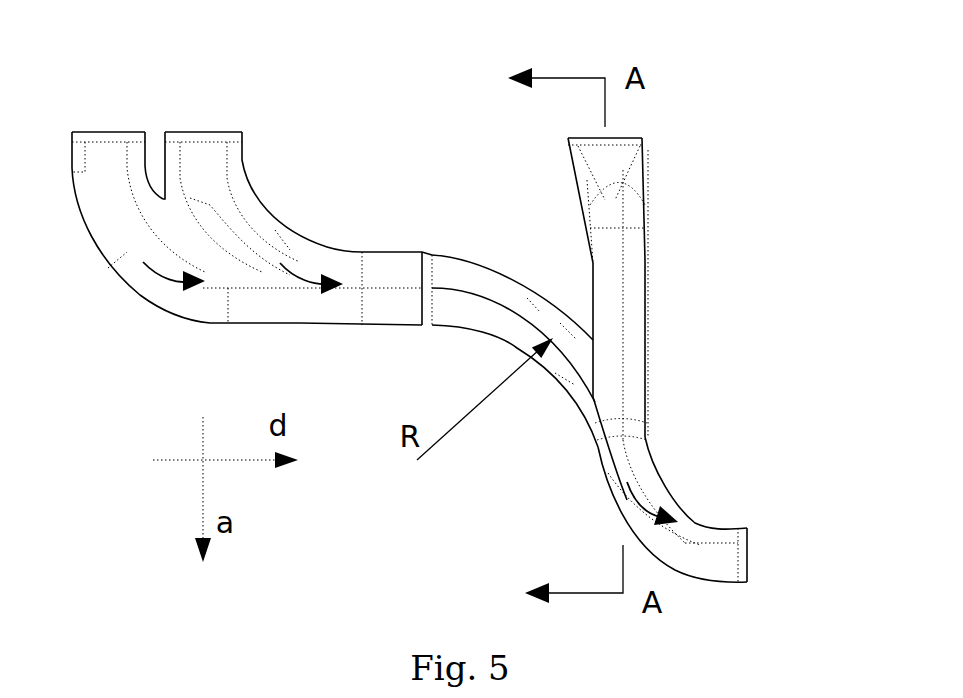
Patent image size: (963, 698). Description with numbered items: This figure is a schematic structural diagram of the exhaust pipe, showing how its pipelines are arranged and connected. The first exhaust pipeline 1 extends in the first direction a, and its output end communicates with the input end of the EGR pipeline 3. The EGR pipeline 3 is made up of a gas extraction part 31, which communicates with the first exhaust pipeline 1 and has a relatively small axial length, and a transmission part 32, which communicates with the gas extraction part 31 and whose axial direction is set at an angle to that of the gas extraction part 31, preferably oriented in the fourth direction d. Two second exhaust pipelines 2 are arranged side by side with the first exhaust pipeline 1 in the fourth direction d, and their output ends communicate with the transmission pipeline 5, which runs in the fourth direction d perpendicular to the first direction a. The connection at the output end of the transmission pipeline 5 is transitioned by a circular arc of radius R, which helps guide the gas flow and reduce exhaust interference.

The first exhaust pipeline 1 is at (620, 163).
The second exhaust pipeline 2 is at (198, 142).
The EGR pipeline 3 is at (730, 461).
The transmission pipeline 5 is at (465, 268).
The gas extraction part 31 is at (628, 340).
The transmission part 32 is at (722, 528).